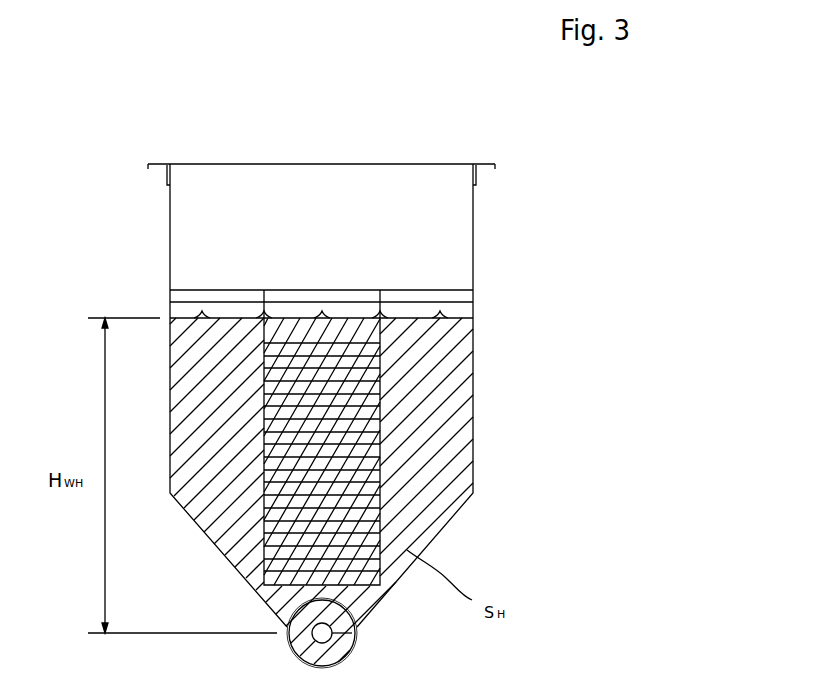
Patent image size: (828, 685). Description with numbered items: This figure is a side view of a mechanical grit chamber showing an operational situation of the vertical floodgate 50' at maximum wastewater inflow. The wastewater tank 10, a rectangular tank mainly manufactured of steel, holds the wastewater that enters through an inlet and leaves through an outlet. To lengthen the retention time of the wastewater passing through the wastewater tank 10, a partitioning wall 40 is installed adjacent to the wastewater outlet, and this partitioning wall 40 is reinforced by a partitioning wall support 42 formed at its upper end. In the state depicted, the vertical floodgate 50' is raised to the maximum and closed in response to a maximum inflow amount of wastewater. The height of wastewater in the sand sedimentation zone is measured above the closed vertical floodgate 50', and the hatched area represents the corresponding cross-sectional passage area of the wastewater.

The wastewater tank 10 is at (170, 258).
The partitioning wall 40 is at (464, 312).
The partitioning wall support 42 is at (231, 297).
The vertical floodgate 50' is at (407, 401).